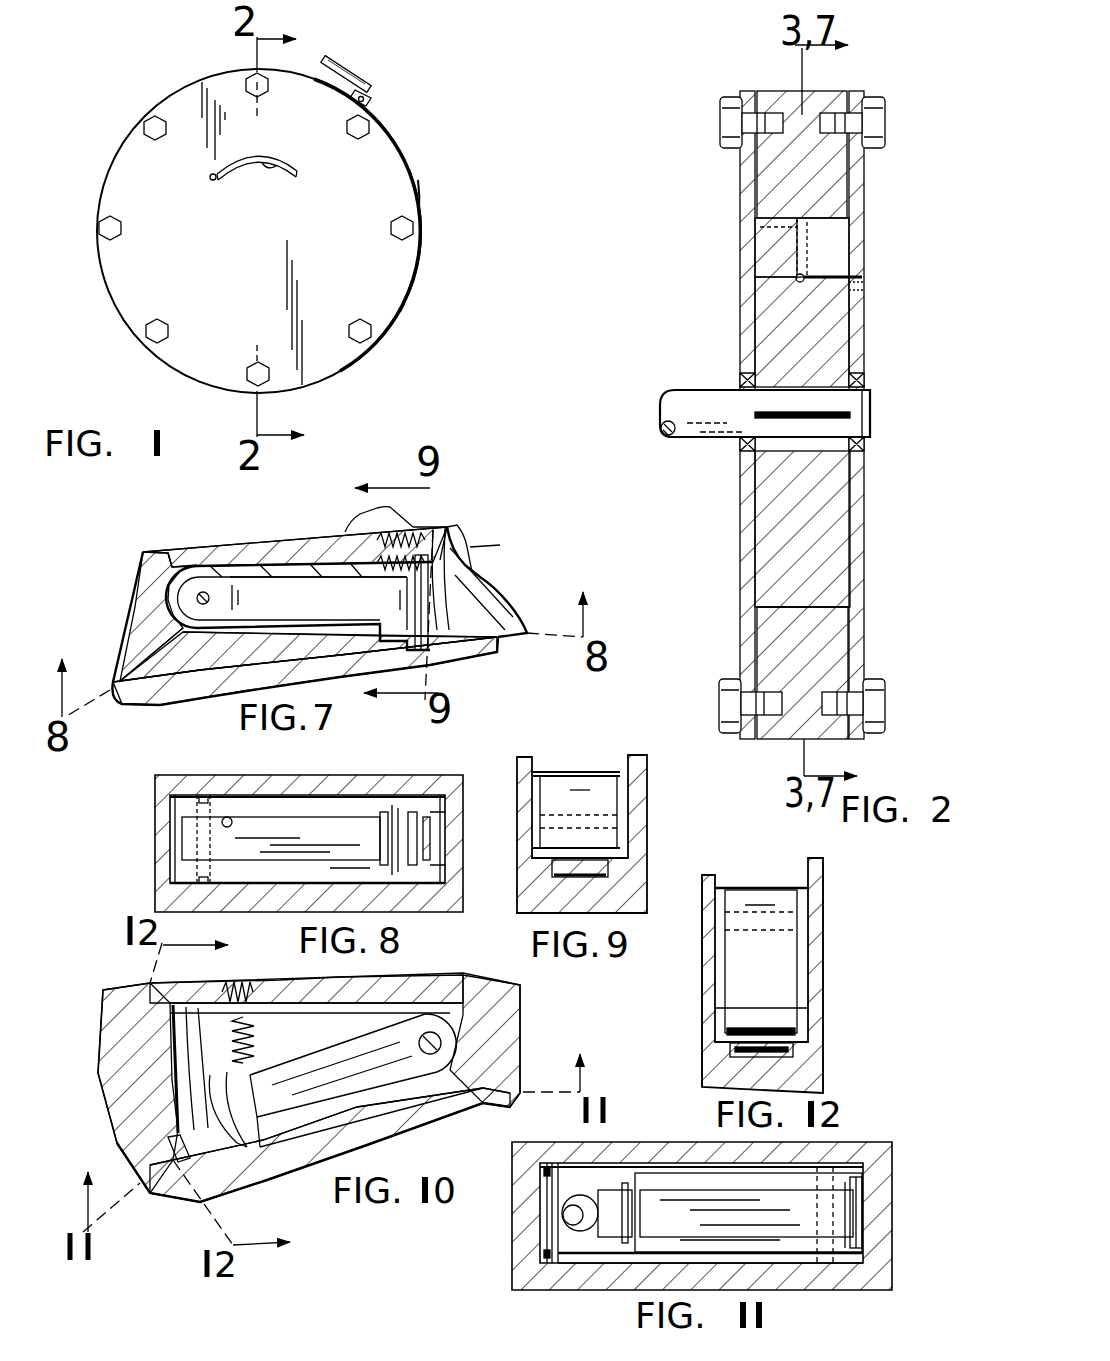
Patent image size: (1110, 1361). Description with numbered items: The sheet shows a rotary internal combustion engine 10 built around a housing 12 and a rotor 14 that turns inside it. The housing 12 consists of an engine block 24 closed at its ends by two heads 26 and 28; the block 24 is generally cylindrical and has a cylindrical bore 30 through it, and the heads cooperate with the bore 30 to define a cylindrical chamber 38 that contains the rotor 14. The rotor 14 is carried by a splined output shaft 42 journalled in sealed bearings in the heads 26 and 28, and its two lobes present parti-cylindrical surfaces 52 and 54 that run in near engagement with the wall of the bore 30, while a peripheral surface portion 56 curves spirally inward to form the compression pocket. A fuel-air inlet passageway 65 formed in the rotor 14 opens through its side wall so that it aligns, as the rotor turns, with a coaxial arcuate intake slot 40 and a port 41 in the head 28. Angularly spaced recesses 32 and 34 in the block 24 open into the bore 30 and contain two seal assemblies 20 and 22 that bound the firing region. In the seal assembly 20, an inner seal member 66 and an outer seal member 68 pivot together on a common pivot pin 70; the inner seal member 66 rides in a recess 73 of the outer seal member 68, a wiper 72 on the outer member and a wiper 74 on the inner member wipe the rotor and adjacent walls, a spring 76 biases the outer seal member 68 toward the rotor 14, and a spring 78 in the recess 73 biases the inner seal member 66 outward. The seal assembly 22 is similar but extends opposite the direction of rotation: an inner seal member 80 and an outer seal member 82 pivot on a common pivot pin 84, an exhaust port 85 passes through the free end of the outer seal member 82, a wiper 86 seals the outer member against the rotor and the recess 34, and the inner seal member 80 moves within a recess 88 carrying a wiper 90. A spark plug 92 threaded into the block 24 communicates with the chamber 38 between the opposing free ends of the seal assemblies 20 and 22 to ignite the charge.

In FIG. 1, the rotary internal combustion engine 10 is at (386, 64).
In FIG. 2, the rotary internal combustion engine 10 is at (888, 47).
In FIG. 1, the housing 12 is at (412, 155).
In FIG. 2, the housing 12 is at (878, 207).
In FIG. 2, the rotor 14 is at (808, 575).
In FIG. 7, the rotor 14 is at (167, 700).
In FIG. 9, the rotor 14 is at (530, 905).
In FIG. 12, the rotor 14 is at (802, 1070).
In FIG. 10, the rotor 14 is at (173, 1193).
In FIG. 7, the seal assembly 20 is at (327, 524).
In FIG. 8, the seal assembly 20 is at (388, 773).
In FIG. 9, the seal assembly 20 is at (586, 760).
In FIG. 12, the seal assembly 22 is at (763, 877).
In FIG. 10, the seal assembly 22 is at (377, 1000).
In FIG. 11, the seal assembly 22 is at (821, 1156).
In FIG. 1, the engine block 24 is at (418, 196).
In FIG. 2, the engine block 24 is at (820, 95).
In FIG. 7, the engine block 24 is at (345, 532).
In FIG. 10, the engine block 24 is at (268, 960).
In FIG. 2, the head 26 is at (740, 292).
In FIG. 12, the head 26 is at (702, 980).
In FIG. 1, the head 28 is at (398, 291).
In FIG. 2, the head 28 is at (865, 332).
In FIG. 12, the head 28 is at (822, 898).
In FIG. 2, the cylindrical bore 30 is at (780, 604).
In FIG. 7, the recess 32 is at (173, 573).
In FIG. 8, the recess 32 is at (278, 795).
In FIG. 9, the recess 32 is at (613, 790).
In FIG. 12, the recess 34 is at (803, 978).
In FIG. 10, the recess 34 is at (150, 1043).
In FIG. 11, the recess 34 is at (653, 1168).
In FIG. 2, the cylindrical chamber 38 is at (840, 492).
In FIG. 1, the intake slot 40 is at (292, 168).
In FIG. 2, the intake slot 40 is at (862, 280).
In FIG. 1, the port 41 is at (210, 180).
In FIG. 2, the output shaft 42 is at (714, 434).
In FIG. 2, the parti-cylindrical surface 52 is at (827, 618).
In FIG. 2, the parti-cylindrical surface 54 is at (818, 213).
In FIG. 7, the peripheral surface portion 56 is at (197, 670).
In FIG. 10, the peripheral surface portion 56 is at (467, 1103).
In FIG. 2, the fuel-air inlet passageway 65 is at (760, 227).
In FIG. 7, the inner seal member 66 is at (310, 588).
In FIG. 8, the inner seal member 66 is at (333, 830).
In FIG. 9, the inner seal member 66 is at (603, 868).
In FIG. 7, the outer seal member 68 is at (270, 563).
In FIG. 8, the outer seal member 68 is at (263, 870).
In FIG. 9, the outer seal member 68 is at (603, 780).
In FIG. 7, the pivot pin 70 is at (208, 592).
In FIG. 7, the sealing element or wiper 72 is at (510, 613).
In FIG. 8, the sealing element or wiper 72 is at (433, 792).
In FIG. 9, the sealing element or wiper 72 is at (623, 837).
In FIG. 7, the recess 73 is at (285, 573).
In FIG. 8, the recess 73 is at (227, 820).
In FIG. 7, the sealing element or wiper 74 is at (473, 593).
In FIG. 8, the sealing element or wiper 74 is at (452, 866).
In FIG. 9, the sealing element or wiper 74 is at (640, 898).
In FIG. 7, the spring 76 is at (438, 533).
In FIG. 7, the spring 78 is at (447, 553).
In FIG. 10, the inner seal member 80 is at (350, 1077).
In FIG. 11, the inner seal member 80 is at (657, 1223).
In FIG. 10, the outer seal member 82 is at (302, 992).
In FIG. 11, the outer seal member 82 is at (575, 1257).
In FIG. 10, the pivot pin 84 is at (413, 1080).
In FIG. 11, the pivot pin 84 is at (852, 1235).
In FIG. 10, the exhaust port 85 is at (177, 1077).
In FIG. 11, the exhaust port 85 is at (563, 1217).
In FIG. 12, the sealing element or wiper 86 is at (718, 1030).
In FIG. 10, the sealing element or wiper 86 is at (170, 1160).
In FIG. 11, the sealing element or wiper 86 is at (540, 1253).
In FIG. 10, the recess 88 is at (383, 1018).
In FIG. 11, the recess 88 is at (790, 1253).
In FIG. 12, the sealing element or wiper 90 is at (792, 1050).
In FIG. 10, the sealing element or wiper 90 is at (260, 1180).
In FIG. 11, the sealing element or wiper 90 is at (548, 1170).
In FIG. 1, the spark plug 92 is at (368, 99).